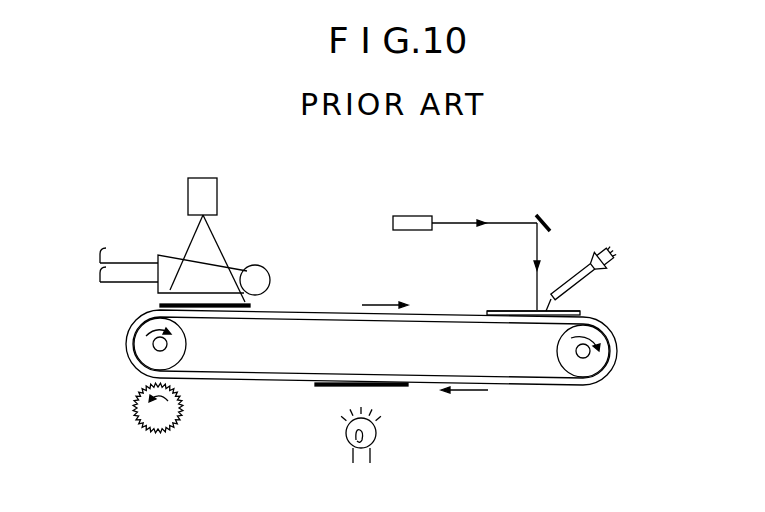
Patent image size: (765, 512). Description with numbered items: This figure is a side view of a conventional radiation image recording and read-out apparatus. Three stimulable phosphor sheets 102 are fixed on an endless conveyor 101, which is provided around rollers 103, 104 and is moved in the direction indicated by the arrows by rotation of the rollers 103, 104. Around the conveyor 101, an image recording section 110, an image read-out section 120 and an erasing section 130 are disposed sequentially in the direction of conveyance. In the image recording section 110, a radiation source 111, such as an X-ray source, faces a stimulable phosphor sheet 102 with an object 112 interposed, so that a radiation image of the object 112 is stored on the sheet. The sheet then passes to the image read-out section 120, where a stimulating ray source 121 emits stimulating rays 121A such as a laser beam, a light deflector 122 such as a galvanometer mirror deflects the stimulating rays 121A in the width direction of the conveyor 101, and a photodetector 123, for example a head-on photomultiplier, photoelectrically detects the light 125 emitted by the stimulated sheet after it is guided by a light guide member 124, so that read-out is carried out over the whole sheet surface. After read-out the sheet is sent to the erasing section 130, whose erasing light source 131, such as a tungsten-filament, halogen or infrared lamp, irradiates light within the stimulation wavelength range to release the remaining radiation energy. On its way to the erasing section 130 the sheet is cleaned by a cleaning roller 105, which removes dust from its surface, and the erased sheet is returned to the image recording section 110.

The endless conveyor 101 is at (587, 388).
The stimulable phosphor sheet 102 is at (262, 305).
The roller 103 is at (598, 362).
The roller 104 is at (143, 350).
The cleaning roller 105 is at (178, 404).
The image recording section 110 is at (199, 226).
The radiation source 111 is at (217, 205).
The object 112 is at (170, 255).
The image read-out section 120 is at (518, 236).
The stimulating ray source 121 is at (406, 231).
The stimulating rays 121A is at (462, 224).
The light deflector 122 is at (546, 213).
The photodetector 123 is at (598, 250).
The light guide member 124 is at (557, 292).
The emitted light 125 is at (548, 323).
The erasing section 130 is at (365, 444).
The erasing light source 131 is at (347, 432).